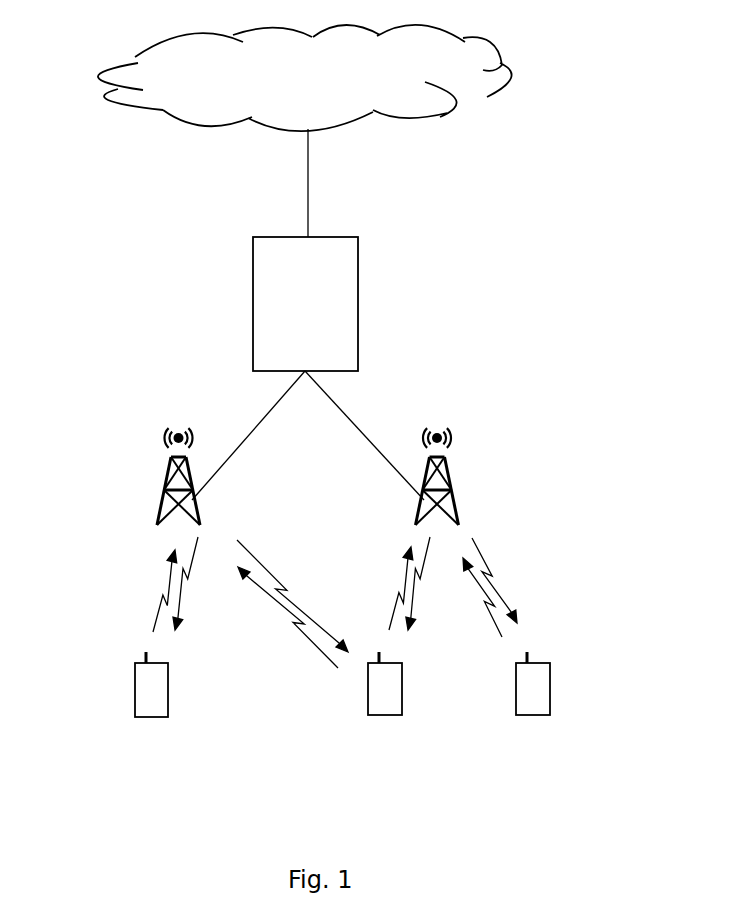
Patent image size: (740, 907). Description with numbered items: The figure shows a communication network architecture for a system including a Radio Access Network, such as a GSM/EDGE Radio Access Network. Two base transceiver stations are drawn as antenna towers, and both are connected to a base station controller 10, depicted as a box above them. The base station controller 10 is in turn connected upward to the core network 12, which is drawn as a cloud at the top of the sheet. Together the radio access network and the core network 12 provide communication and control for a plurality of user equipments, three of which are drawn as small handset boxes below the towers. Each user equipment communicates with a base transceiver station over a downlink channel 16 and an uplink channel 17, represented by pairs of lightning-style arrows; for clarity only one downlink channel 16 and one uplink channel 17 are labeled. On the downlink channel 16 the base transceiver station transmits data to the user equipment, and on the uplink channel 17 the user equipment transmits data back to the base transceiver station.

The base station controller 10 is at (357, 297).
The core network 12 is at (518, 52).
The downlink channel 16 is at (250, 547).
The uplink channel 17 is at (160, 585).